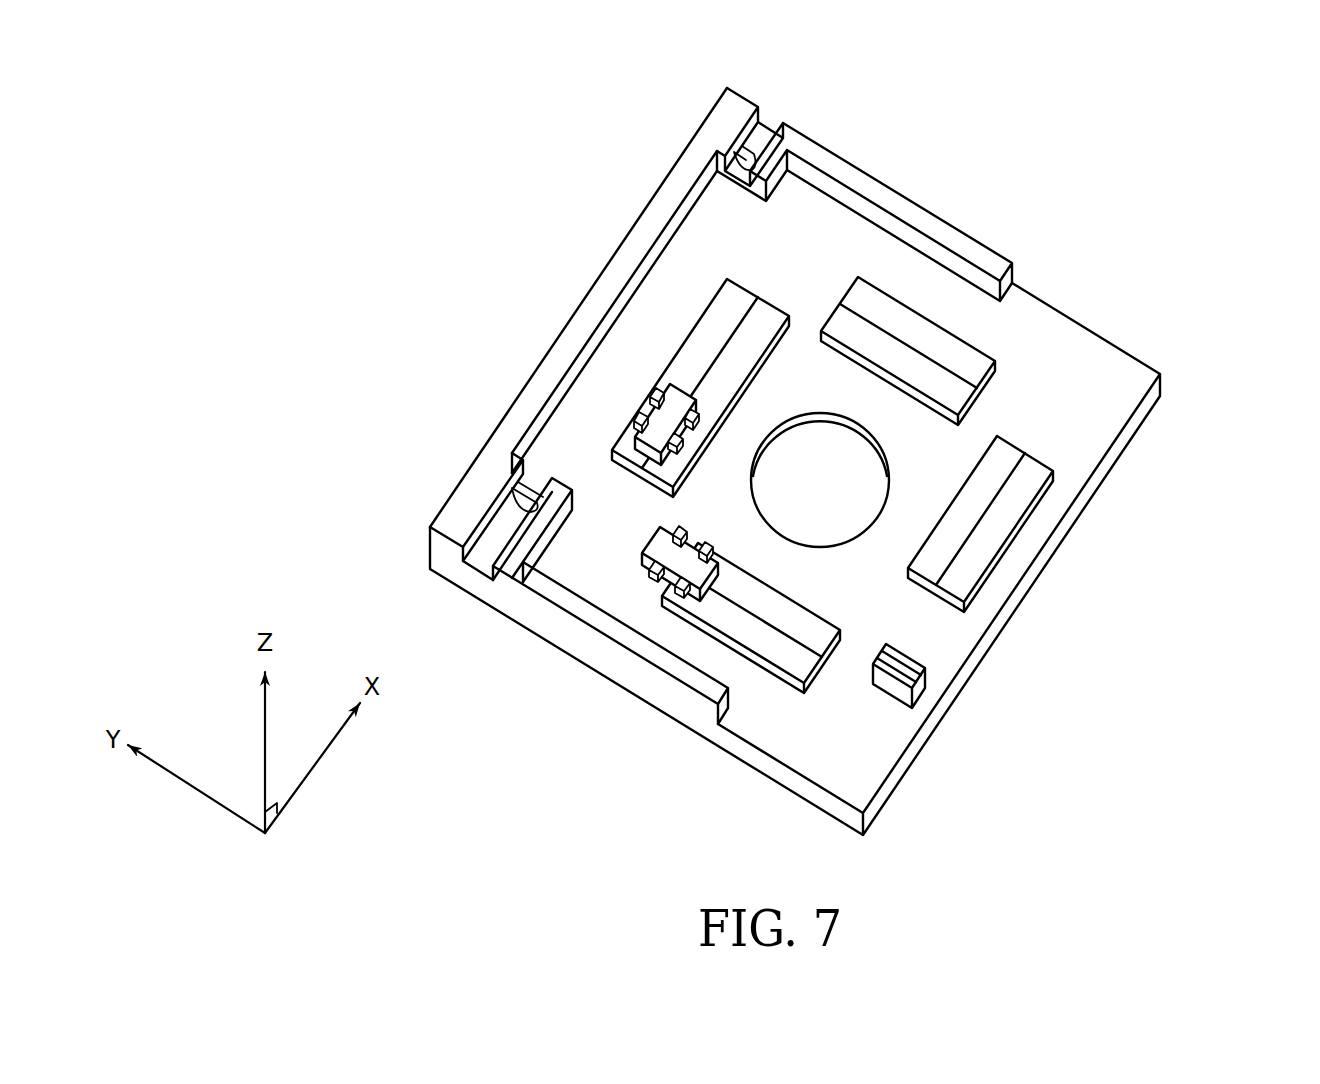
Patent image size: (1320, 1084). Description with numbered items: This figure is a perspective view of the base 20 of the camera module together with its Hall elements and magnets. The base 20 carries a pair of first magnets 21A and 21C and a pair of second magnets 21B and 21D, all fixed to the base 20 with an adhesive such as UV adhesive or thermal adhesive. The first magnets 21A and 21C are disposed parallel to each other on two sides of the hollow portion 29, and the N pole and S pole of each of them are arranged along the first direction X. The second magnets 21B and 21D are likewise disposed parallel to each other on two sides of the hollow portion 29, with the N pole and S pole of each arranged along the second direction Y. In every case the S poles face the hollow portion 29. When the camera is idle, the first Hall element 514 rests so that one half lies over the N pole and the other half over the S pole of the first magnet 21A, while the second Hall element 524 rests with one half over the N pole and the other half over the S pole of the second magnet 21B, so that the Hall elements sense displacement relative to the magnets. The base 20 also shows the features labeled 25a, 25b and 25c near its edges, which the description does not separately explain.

The base 20 is at (1143, 357).
The first magnet 21A is at (773, 683).
The second magnet 21B is at (770, 288).
The first magnet 21C is at (935, 318).
The second magnet 21D is at (1015, 548).
The positioning block 25a is at (930, 696).
The positioning slot 25b is at (510, 470).
The positioning slot 25c is at (740, 143).
The hollow portion 29 is at (820, 470).
The first Hall element 514 is at (668, 553).
The second Hall element 524 is at (662, 425).